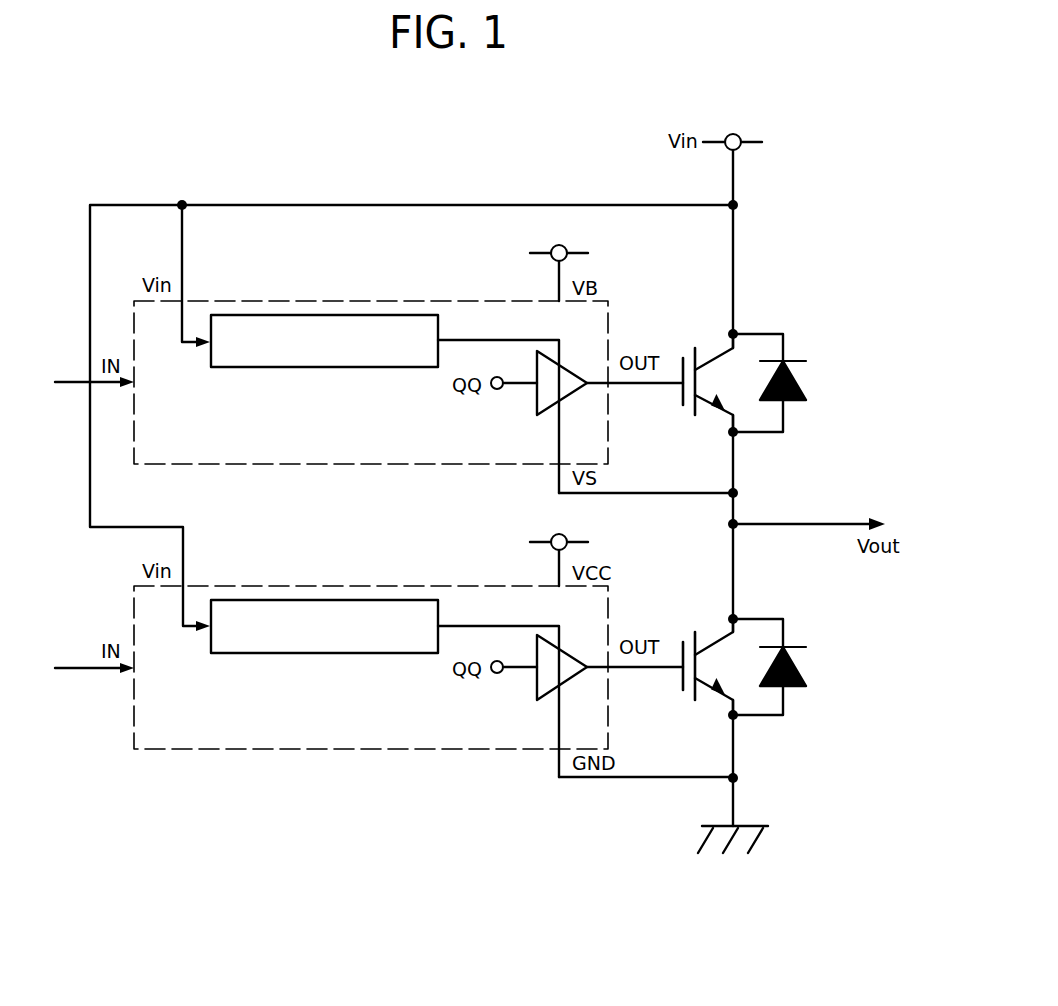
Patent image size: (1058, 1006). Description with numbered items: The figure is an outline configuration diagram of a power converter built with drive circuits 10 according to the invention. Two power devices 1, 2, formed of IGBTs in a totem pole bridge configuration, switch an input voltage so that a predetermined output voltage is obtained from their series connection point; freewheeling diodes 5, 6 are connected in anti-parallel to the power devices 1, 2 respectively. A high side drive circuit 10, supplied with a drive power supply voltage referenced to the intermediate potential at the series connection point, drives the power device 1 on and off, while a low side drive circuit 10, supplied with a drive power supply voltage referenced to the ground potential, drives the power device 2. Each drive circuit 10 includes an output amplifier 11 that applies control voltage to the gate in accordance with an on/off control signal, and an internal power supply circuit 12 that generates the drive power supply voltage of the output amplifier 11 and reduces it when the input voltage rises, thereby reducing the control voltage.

The power device 1 is at (705, 350).
The power device 2 is at (712, 640).
The freewheeling diode 5 is at (803, 383).
The freewheeling diode 6 is at (800, 670).
The drive circuit 10 is at (340, 434).
The output amplifier 11 is at (548, 403).
The internal power supply circuit 12 is at (268, 368).